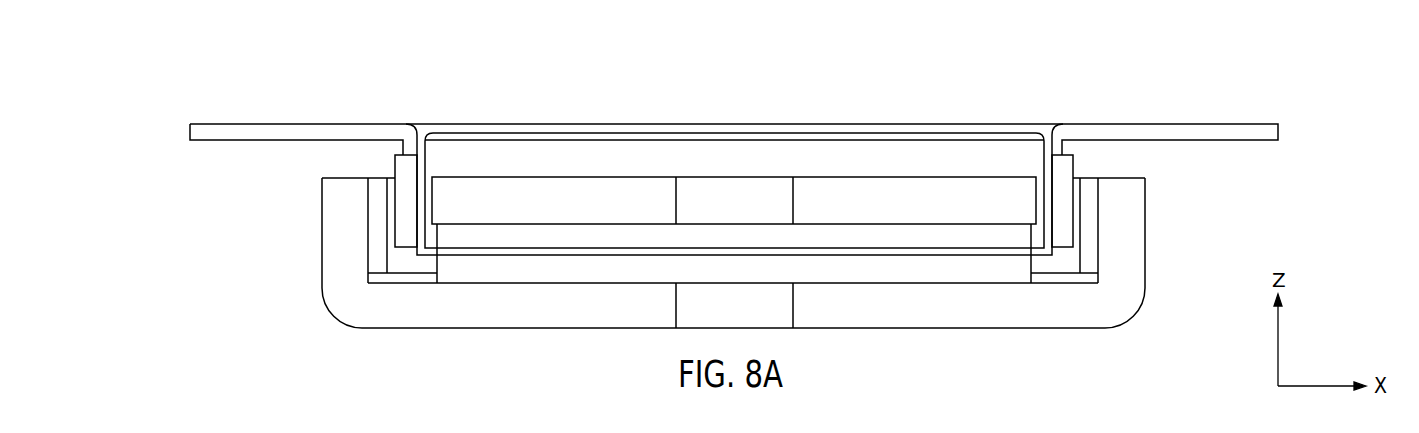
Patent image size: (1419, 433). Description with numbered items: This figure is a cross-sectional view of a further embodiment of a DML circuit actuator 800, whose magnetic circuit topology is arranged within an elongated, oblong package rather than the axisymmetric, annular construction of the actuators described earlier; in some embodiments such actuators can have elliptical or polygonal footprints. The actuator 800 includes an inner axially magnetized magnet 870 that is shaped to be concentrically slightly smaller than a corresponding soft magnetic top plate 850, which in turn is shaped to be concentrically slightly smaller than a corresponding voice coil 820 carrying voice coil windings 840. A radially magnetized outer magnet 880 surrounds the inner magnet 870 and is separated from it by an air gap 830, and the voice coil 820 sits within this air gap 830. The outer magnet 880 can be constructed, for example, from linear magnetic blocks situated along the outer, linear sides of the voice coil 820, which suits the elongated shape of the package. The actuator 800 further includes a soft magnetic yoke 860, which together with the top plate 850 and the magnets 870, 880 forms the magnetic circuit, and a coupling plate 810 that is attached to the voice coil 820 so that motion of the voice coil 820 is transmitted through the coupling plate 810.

The actuator 800 is at (549, 74).
The coupling plate 810 is at (190, 132).
The voice coil 820 is at (405, 167).
The air gap 830 is at (390, 200).
The voice coil windings 840 is at (407, 228).
The soft magnetic top plate 850 is at (1017, 197).
The soft magnetic yoke 860 is at (1138, 202).
The inner axially magnetized magnet 870 is at (1025, 242).
The radially magnetized outer magnet 880 is at (1087, 260).